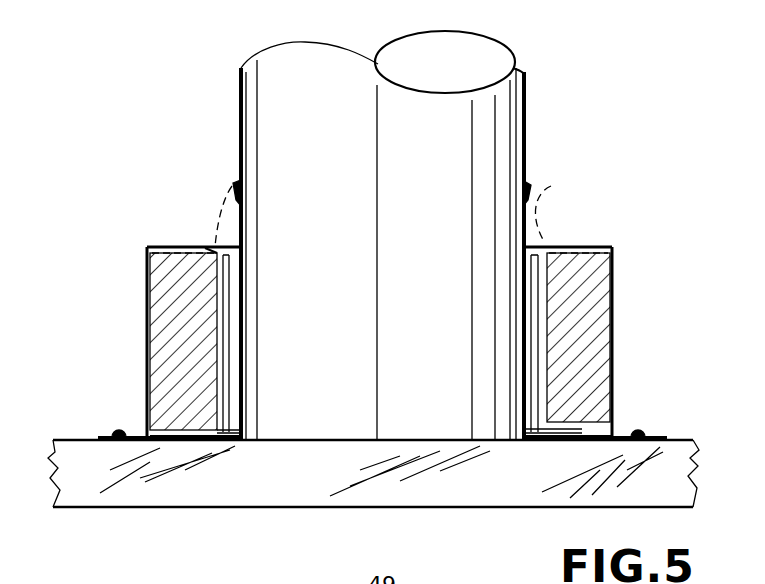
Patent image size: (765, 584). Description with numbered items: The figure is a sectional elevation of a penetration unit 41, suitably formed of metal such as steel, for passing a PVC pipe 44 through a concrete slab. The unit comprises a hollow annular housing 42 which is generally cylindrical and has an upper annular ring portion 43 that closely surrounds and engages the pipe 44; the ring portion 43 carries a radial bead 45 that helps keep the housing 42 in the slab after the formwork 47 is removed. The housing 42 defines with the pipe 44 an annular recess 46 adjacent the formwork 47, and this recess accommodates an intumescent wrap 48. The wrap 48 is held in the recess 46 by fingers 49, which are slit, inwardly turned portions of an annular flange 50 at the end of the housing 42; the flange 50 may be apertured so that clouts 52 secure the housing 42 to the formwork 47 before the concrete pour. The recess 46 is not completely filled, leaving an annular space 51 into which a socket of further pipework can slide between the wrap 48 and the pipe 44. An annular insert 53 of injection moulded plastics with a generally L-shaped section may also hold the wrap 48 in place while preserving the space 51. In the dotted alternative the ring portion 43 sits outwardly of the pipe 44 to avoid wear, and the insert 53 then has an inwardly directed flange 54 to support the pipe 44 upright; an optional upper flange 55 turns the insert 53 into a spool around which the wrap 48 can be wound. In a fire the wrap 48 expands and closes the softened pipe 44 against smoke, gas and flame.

The penetration unit 41 is at (80, 276).
The hollow annular housing 42 is at (149, 354).
The upper annular ring portion 43 is at (213, 219).
The PVC pipe 44 is at (524, 125).
The radial bead 45 is at (226, 192).
The annular recess 46 is at (619, 355).
The formwork 47 is at (675, 478).
The intumescent wrap 48 is at (613, 283).
The fingers 49 is at (151, 446).
The annular flange 50 is at (660, 438).
The annular space 51 is at (234, 424).
The clouts 52 is at (120, 431).
The annular insert 53 is at (219, 343).
The inwardly directed flange 54 is at (543, 243).
The upper flange 55 is at (161, 247).